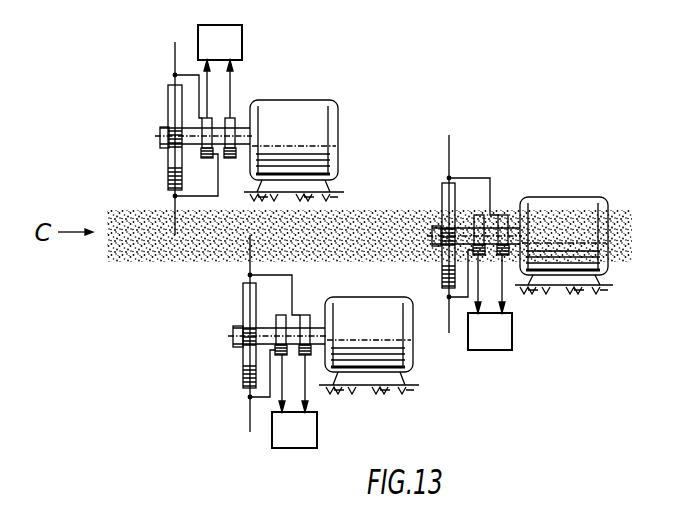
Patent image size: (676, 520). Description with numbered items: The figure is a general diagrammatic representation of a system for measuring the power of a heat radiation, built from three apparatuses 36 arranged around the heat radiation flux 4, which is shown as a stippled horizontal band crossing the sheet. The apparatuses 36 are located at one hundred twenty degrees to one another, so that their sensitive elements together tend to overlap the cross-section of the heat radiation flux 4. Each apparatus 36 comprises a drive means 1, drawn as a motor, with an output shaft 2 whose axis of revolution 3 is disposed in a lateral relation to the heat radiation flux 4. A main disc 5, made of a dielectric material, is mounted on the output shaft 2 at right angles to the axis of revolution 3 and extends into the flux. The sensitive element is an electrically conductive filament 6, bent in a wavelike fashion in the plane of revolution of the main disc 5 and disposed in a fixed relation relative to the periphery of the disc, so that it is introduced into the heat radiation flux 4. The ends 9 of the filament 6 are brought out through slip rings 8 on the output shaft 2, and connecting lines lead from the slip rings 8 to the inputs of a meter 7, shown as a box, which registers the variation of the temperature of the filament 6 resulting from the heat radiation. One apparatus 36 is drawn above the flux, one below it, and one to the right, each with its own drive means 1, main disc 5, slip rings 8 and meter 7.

The drive means 1 is at (318, 110).
The output shaft 2 is at (160, 137).
The axis of revolution 3 is at (236, 117).
The heat radiation flux 4 is at (152, 262).
The main disc 5 is at (168, 96).
The electrically conductive filament 6 is at (175, 50).
The meter 7 is at (355, 236).
The slip rings 8 is at (203, 117).
The ends of the filament 9 is at (212, 194).
The apparatus 36 is at (297, 82).